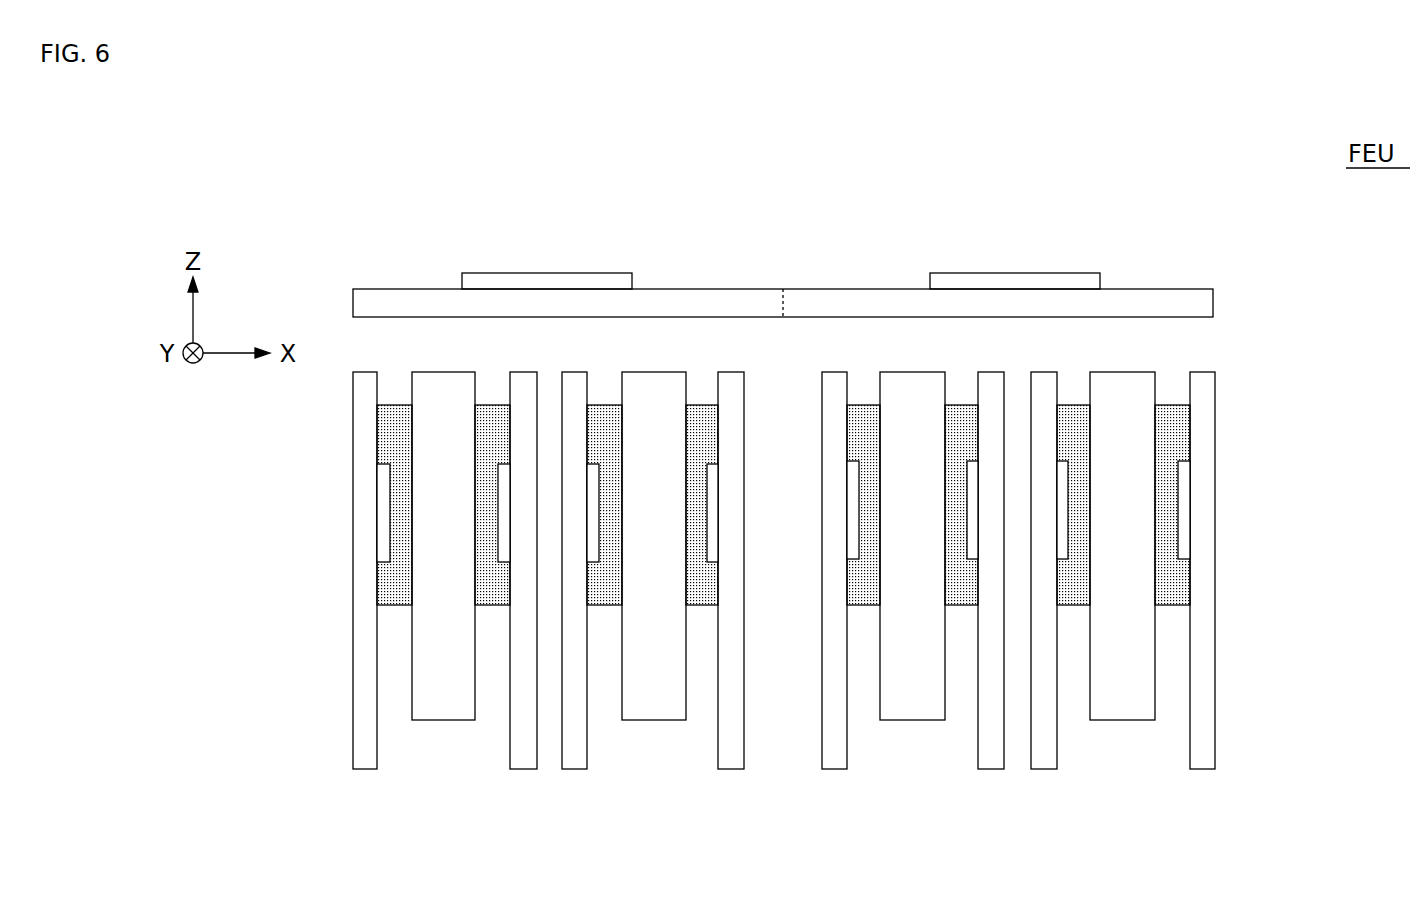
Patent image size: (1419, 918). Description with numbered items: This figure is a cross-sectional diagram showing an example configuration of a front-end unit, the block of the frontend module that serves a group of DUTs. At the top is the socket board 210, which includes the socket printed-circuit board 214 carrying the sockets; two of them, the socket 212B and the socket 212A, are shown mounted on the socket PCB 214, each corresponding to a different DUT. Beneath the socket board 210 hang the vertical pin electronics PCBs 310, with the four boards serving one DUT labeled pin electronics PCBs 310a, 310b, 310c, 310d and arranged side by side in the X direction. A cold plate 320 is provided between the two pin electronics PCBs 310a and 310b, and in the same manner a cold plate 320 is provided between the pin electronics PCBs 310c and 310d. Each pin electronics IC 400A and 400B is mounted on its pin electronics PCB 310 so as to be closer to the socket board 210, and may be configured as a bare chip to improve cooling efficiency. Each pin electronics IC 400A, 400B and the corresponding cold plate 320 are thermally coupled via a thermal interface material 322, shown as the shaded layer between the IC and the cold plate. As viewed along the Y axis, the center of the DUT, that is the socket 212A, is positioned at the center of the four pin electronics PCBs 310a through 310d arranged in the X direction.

The socket board 210 is at (1262, 251).
The socket printed-circuit board 214 is at (1213, 300).
The socket 212A is at (1015, 280).
The socket 212B is at (548, 280).
The pin electronics PCB 310 is at (366, 771).
The pin electronics PCB 310a is at (1201, 771).
The pin electronics PCB 310b is at (1046, 771).
The pin electronics PCB 310c is at (990, 771).
The pin electronics PCB 310d is at (835, 771).
The cold plate 320 is at (443, 713).
The thermal interface material 322 is at (397, 412).
The pin electronics IC 400A is at (852, 470).
The pin electronics IC 400B is at (383, 512).